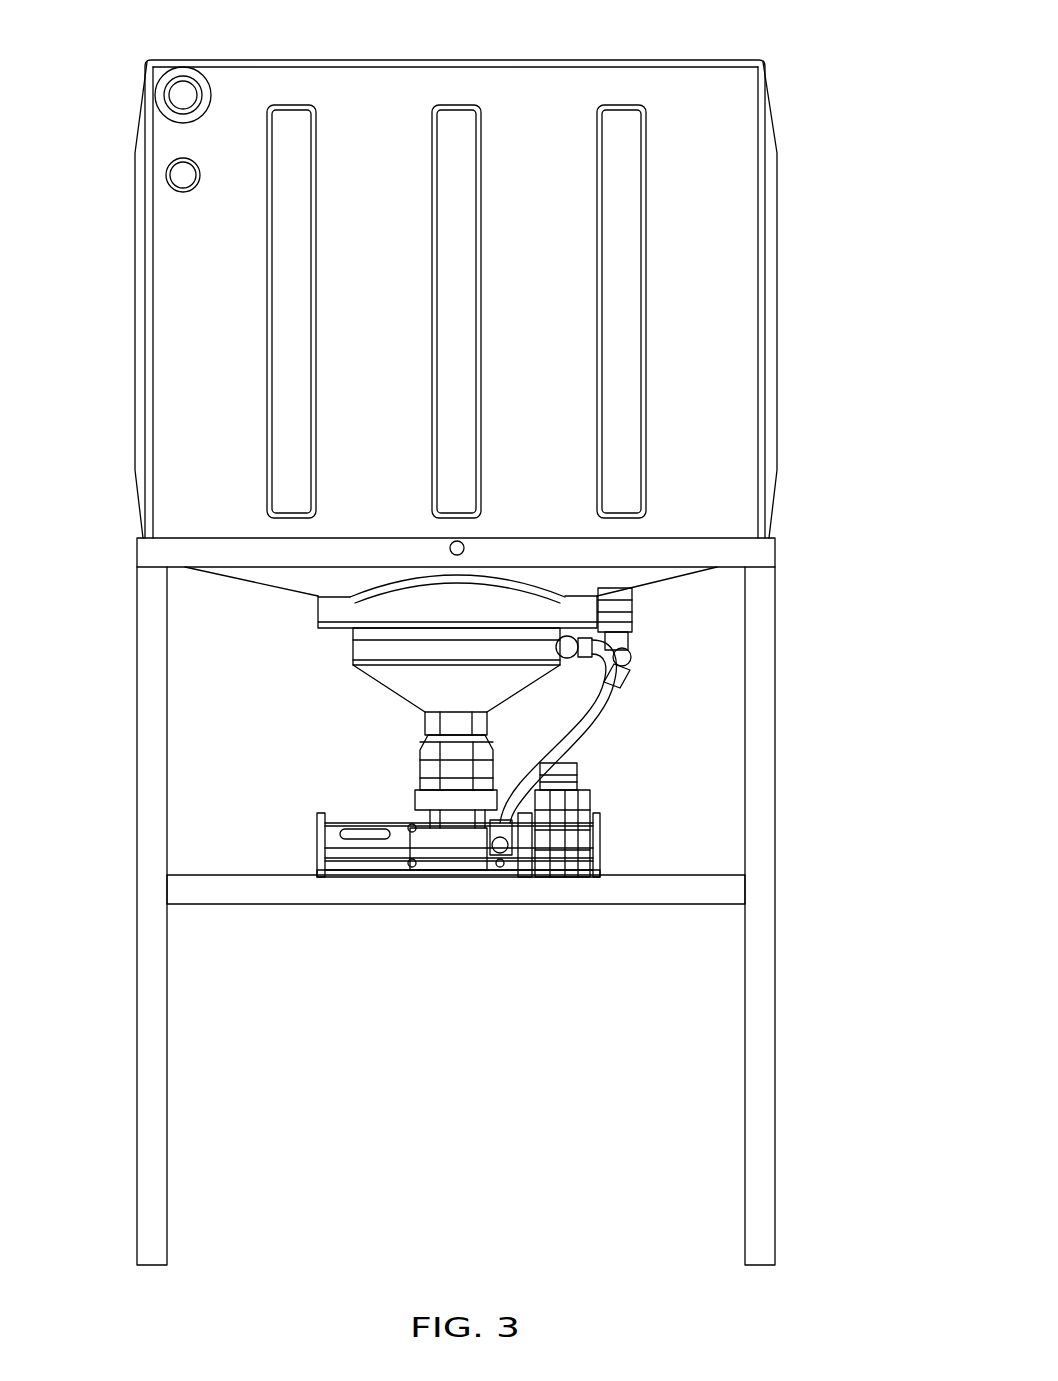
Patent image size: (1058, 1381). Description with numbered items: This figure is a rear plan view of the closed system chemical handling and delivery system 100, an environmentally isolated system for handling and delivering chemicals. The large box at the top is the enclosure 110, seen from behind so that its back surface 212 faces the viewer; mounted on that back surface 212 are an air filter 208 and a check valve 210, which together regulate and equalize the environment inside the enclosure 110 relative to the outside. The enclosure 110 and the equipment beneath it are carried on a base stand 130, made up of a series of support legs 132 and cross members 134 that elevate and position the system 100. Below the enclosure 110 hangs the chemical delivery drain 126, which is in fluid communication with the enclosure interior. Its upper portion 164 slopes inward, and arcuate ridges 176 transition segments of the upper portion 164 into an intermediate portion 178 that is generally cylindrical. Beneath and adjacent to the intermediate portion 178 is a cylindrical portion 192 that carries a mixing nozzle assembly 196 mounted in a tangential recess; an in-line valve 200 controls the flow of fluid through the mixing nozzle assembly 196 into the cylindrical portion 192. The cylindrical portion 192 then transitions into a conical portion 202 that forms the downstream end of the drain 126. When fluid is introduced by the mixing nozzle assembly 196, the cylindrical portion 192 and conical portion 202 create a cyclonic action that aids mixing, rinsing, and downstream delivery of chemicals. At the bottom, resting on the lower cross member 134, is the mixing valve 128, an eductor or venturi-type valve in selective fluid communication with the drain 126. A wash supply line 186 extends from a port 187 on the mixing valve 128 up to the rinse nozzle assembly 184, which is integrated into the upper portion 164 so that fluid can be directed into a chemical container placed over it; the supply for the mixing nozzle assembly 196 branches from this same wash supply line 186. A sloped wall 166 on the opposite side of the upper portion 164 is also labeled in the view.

The closed system chemical handling and delivery system 100 is at (757, 45).
The enclosure 110 is at (776, 417).
The chemical delivery drain 126 is at (356, 689).
The mixing valve 128 is at (362, 880).
The base stand 130 is at (105, 1070).
The support legs 132 is at (137, 822).
The cross members 134 is at (776, 551).
The upper portion 164 is at (665, 578).
The left sloped bottom wall 166 is at (222, 575).
The arcuate ridges 176 is at (387, 588).
The intermediate portion 178 is at (318, 604).
The rinse nozzle assembly 184 is at (645, 642).
The wash supply line 186 is at (587, 722).
The port 187 is at (520, 878).
The cylindrical portion 192 is at (357, 645).
The mixing nozzle assembly 196 is at (571, 667).
The in-line valve 200 is at (567, 636).
The conical portion 202 is at (393, 690).
The air filter 208 is at (172, 191).
The check valve 210 is at (191, 68).
The back surface 212 is at (393, 237).